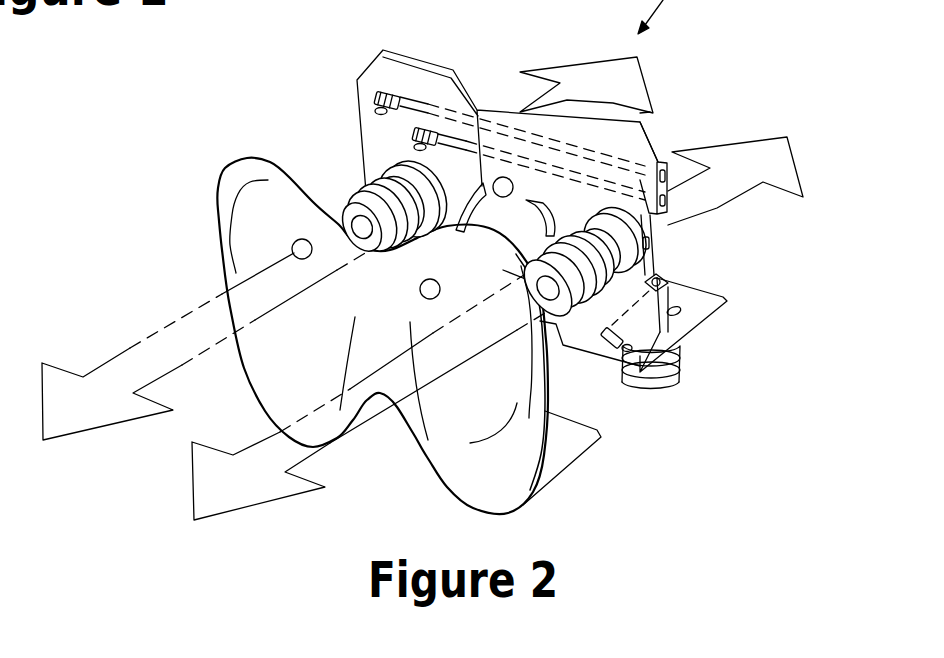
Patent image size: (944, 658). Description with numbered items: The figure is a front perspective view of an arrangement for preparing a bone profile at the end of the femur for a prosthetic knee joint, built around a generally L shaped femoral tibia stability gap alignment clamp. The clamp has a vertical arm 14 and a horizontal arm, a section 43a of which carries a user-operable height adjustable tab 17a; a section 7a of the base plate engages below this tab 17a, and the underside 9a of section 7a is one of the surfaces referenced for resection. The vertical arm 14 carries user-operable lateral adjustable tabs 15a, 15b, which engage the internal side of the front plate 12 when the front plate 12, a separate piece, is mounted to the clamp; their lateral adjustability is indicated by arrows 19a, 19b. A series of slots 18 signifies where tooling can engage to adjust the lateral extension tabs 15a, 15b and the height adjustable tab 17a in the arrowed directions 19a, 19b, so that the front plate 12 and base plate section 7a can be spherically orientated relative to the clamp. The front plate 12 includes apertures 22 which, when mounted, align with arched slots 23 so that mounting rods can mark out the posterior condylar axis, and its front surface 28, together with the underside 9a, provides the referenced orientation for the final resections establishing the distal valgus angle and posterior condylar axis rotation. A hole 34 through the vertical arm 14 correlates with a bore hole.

The section of the base plate 7a is at (583, 443).
The underside of base plate section 9a is at (580, 478).
The front plate 12 is at (235, 170).
The vertical arm 14 is at (363, 89).
The user-operable lateral adjustable tab 15a is at (656, 277).
The user-operable lateral adjustable tab 15b is at (378, 178).
The user-operable height adjustable tab 17a is at (673, 381).
The slots 18 is at (667, 164).
The arrow 19a is at (308, 490).
The arrow 19b is at (107, 427).
The apertures 22 is at (298, 240).
The arched slots 23 is at (466, 208).
The front surface of the front plate 28 is at (245, 240).
The hole 34 is at (503, 177).
The section of the horizontal arm 43a is at (690, 300).